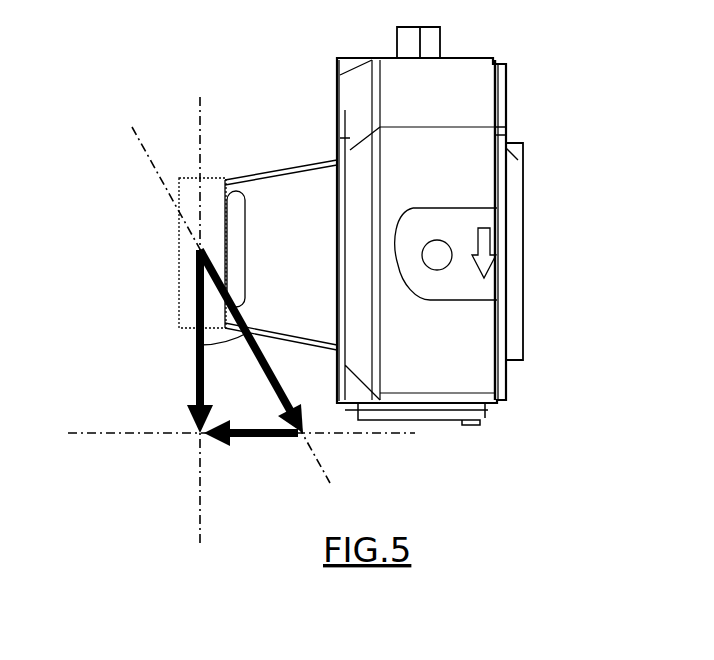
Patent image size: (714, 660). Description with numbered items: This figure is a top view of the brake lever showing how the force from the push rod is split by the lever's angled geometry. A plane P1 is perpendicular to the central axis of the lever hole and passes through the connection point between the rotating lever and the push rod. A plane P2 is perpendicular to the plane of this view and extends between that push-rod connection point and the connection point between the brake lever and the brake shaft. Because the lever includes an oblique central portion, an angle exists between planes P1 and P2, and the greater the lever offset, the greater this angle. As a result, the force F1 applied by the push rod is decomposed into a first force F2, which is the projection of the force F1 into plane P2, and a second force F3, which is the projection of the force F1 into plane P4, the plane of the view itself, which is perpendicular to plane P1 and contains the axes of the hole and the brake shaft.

The plane P1 is at (201, 345).
The plane P2 is at (209, 281).
The plane P4 is at (241, 453).
The force F1 is at (177, 341).
The first force F2 is at (251, 341).
The second force F3 is at (251, 455).